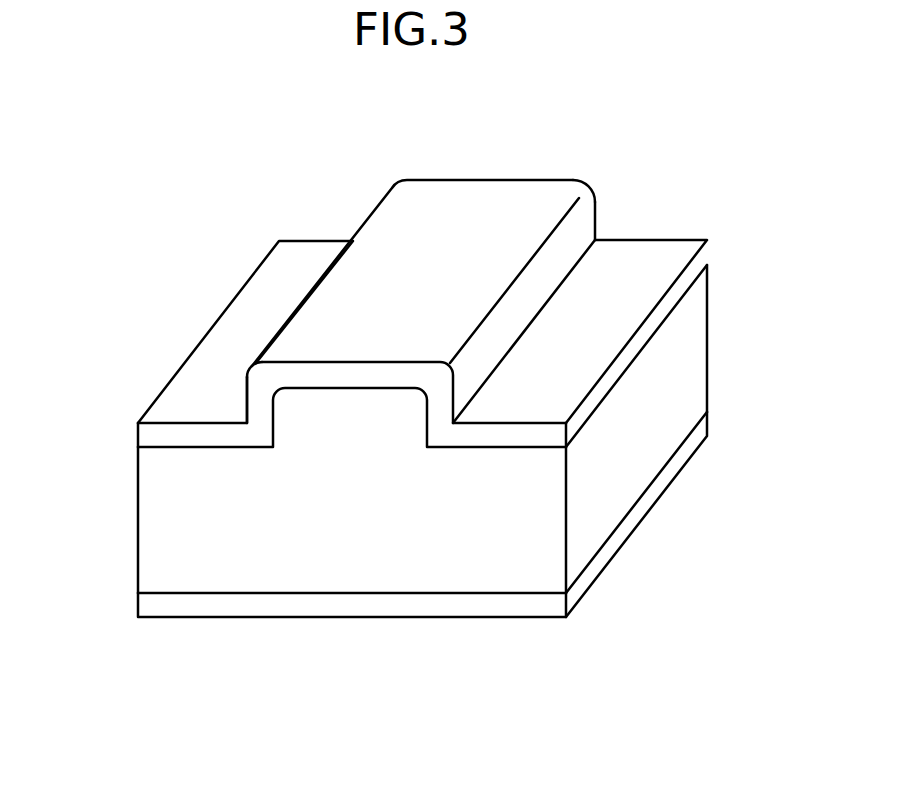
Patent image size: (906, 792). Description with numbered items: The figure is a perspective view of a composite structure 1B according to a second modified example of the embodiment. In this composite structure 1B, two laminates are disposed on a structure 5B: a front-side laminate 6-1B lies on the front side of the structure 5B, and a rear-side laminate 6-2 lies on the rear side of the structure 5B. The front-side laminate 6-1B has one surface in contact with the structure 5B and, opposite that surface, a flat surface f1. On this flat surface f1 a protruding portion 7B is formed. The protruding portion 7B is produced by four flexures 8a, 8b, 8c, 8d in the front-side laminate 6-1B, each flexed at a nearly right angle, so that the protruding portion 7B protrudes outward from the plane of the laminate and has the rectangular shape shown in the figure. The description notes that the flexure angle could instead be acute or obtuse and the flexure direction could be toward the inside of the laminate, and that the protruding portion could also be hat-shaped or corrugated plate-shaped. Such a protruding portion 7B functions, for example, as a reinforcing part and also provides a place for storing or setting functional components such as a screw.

The composite structure 1B is at (573, 123).
The structure 5B is at (170, 527).
The laminate 6-2 is at (352, 603).
The laminate 6-1B is at (318, 257).
The protruding portion 7B is at (455, 257).
The flexure 8a is at (247, 420).
The flexure 8b is at (254, 370).
The flexure 8c is at (594, 206).
The flexure 8d is at (600, 228).
The flat surface f1 is at (670, 253).